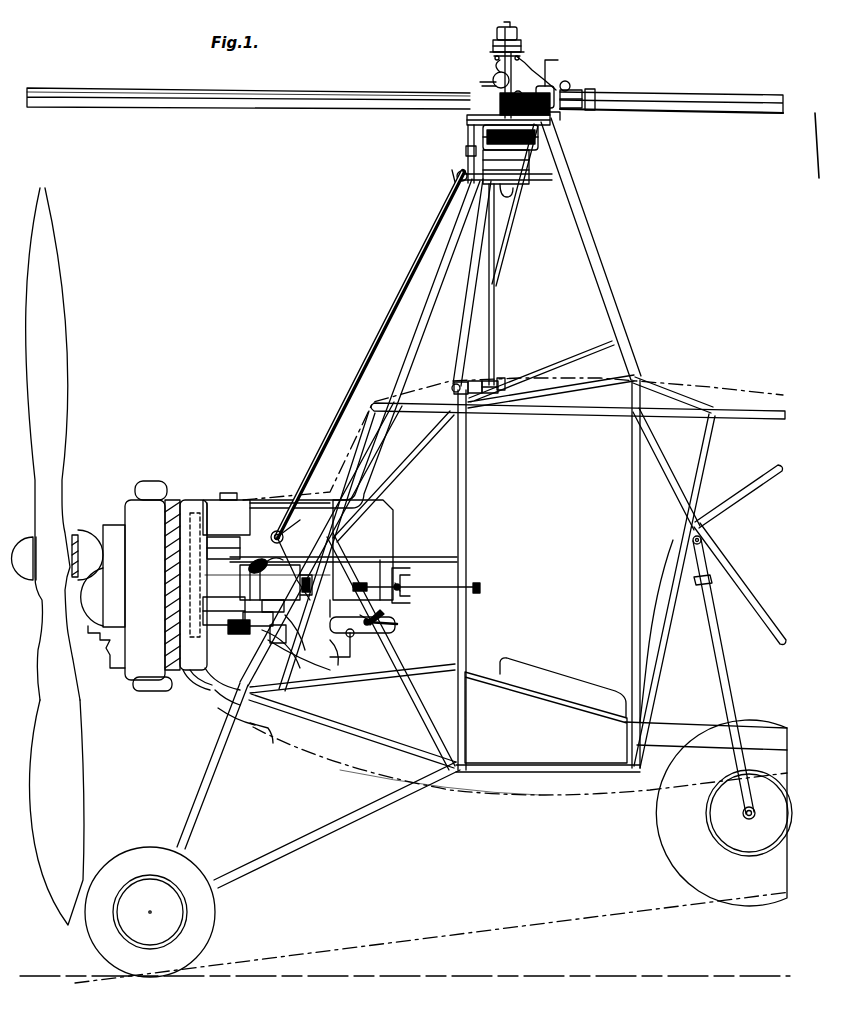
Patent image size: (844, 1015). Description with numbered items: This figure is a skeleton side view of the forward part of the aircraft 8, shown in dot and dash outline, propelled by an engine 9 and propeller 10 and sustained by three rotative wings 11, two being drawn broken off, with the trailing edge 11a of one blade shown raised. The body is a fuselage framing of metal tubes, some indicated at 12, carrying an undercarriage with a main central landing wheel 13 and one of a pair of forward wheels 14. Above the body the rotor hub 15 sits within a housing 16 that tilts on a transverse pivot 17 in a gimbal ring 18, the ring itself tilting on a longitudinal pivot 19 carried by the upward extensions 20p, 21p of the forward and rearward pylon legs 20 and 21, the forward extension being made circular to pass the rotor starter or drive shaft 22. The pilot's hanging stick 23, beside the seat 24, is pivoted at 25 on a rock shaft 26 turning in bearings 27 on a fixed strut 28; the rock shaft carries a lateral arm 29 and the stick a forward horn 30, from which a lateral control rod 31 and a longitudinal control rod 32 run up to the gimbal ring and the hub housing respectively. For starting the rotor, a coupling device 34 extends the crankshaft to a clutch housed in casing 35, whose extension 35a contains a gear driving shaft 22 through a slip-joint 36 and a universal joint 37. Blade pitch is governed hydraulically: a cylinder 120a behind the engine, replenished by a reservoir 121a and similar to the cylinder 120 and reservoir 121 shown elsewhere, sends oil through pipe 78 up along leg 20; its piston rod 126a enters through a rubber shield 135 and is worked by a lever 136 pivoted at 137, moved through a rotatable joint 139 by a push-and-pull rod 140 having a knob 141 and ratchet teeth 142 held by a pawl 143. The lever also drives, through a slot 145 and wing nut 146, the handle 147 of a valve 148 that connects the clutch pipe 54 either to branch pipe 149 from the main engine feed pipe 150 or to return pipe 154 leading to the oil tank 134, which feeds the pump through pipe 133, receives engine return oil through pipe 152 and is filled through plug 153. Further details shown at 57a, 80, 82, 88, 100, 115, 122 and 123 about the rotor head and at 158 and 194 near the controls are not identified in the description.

The aircraft 8 is at (496, 795).
The engine 9 is at (132, 513).
The propeller 10 is at (53, 356).
The rotative wings 11 is at (163, 113).
The trailing edge of blade 11a is at (116, 98).
The fuselage framing elements 12 is at (760, 478).
The main central landing wheel 13 is at (673, 866).
The forwardly disposed wheel 14 is at (217, 912).
The rotor hub 15 is at (546, 86).
The hub housing 16 is at (540, 138).
The transverse pivot 17 is at (504, 201).
The gimbal ring 18 is at (562, 115).
The longitudinal pivot 19 is at (467, 124).
The forward pylon leg 20 is at (404, 348).
The upward extension of forward pylon leg 20p is at (466, 151).
The rearward pylon leg 21 is at (609, 280).
The upward extension of rearward pylon leg 21p is at (556, 158).
The rotor starter or drive shaft 22 is at (455, 197).
The hanging stick 23 is at (467, 530).
The pilot's seat 24 is at (528, 664).
The stick pivot 25 is at (461, 394).
The rock shaft 26 is at (478, 393).
The bearings 27 is at (500, 377).
The fixed strut 28 is at (568, 398).
The laterally projecting arm 29 is at (493, 393).
The forwardly projecting horn 30 is at (452, 385).
The lateral control rod 31 is at (496, 326).
The longitudinal control rod 32 is at (510, 232).
The coupling device 34 is at (271, 607).
The clutch casing 35 is at (292, 562).
The casing extension 35a is at (262, 560).
The slip-joint 36 is at (273, 534).
The universal joint 37 is at (300, 518).
The rotor starter clutch operating pipe 54 is at (336, 658).
The rod end fitting 57a is at (457, 175).
The pressure pipe 78 is at (450, 292).
The pitch horn 80 is at (592, 96).
The pitch horn bracket 82 is at (578, 92).
The hub pivot 88 is at (518, 91).
The rotor hub bearing 100 is at (493, 80).
The control pipe 115 is at (530, 66).
The cylinder 120 is at (494, 57).
The cylinder 120a is at (222, 694).
The reservoir 121 is at (497, 42).
The reservoir 121a is at (215, 630).
The hub cap 122 is at (512, 29).
The hub link 123 is at (497, 68).
The piston rod 126a is at (278, 644).
The oil suction pipe 133 is at (233, 570).
The main oil tank 134 is at (215, 495).
The rubber diaphragm 135 is at (222, 712).
The incidence control lever 136 is at (303, 640).
The lever pivot 137 is at (282, 647).
The rotatable push-and-pull joint 139 is at (380, 578).
The push-and-pull rod 140 is at (432, 590).
The operating handle 141 is at (480, 588).
The ratchet teeth 142 is at (418, 588).
The pawl 143 is at (410, 578).
The slot 145 is at (396, 627).
The wing nut 146 is at (368, 617).
The valve handle 147 is at (384, 616).
The valve 148 is at (354, 644).
The branch pipe 149 is at (340, 686).
The main engine feed pipe 150 is at (207, 676).
The return pipe 152 is at (210, 545).
The filling plug 153 is at (228, 497).
The clutch return pipe 154 is at (279, 500).
The housing 158 is at (350, 560).
The fitting 194 is at (341, 606).